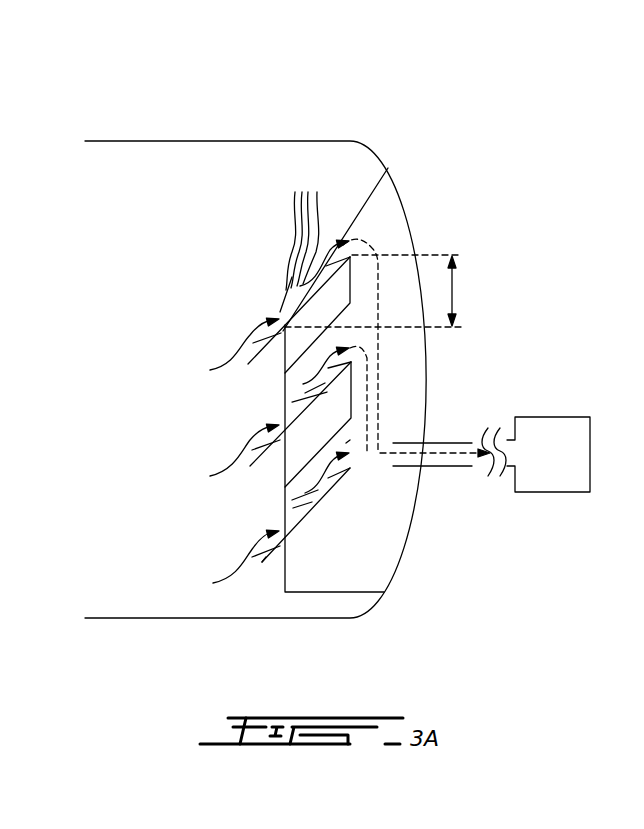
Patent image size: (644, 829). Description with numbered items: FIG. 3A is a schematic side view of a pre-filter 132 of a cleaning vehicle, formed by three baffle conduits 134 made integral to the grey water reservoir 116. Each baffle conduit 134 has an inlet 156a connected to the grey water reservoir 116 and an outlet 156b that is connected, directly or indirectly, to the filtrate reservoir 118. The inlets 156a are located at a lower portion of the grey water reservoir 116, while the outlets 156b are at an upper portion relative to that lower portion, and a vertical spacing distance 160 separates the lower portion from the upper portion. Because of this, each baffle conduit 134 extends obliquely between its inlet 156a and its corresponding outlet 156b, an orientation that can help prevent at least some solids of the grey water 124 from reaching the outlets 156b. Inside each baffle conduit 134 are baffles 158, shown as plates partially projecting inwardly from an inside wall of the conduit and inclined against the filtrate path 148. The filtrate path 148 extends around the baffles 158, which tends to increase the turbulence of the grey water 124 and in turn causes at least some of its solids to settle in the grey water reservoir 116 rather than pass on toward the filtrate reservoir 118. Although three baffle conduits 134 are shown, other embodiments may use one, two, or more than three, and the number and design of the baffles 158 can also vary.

The grey water reservoir 116 is at (190, 150).
The filtrate reservoir 118 is at (568, 467).
The grey water 124 is at (212, 370).
The pre-filter 132 is at (375, 225).
The baffle conduit 134 is at (285, 275).
The filtrate path 148 is at (458, 450).
The inlet 156a is at (262, 562).
The outlet 156b is at (346, 443).
The baffle 158 is at (305, 239).
The vertical spacing distance 160 is at (456, 292).